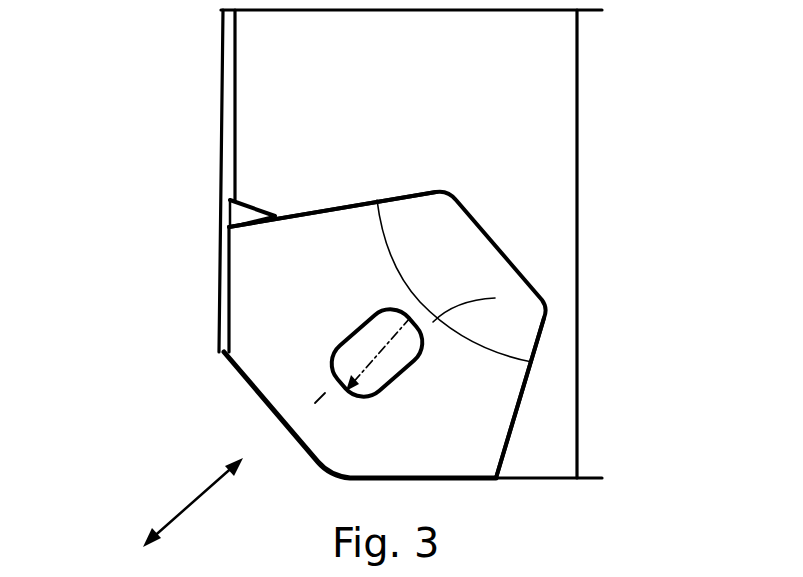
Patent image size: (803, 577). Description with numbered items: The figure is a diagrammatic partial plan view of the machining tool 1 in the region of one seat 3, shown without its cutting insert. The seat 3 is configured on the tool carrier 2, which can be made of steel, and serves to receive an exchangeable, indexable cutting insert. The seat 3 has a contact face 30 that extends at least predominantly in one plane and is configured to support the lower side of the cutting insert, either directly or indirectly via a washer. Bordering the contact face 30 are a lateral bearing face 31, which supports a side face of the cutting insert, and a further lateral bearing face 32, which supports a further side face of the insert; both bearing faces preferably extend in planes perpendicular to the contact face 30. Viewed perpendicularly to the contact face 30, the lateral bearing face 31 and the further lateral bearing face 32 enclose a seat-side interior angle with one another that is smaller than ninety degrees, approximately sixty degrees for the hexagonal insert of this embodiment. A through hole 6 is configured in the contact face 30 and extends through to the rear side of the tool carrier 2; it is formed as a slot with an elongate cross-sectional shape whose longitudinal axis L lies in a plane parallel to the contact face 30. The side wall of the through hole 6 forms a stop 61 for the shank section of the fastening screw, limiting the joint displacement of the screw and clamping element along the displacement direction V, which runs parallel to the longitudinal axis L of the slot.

The machining tool 1 is at (147, 105).
The tool carrier 2 is at (505, 125).
The seat 3 is at (283, 295).
The contact face 30 is at (273, 336).
The lateral bearing face 31 is at (502, 417).
The further lateral bearing face 32 is at (358, 214).
The through hole 6 is at (352, 360).
The stop 61 is at (353, 388).
The longitudinal axis L is at (327, 397).
The displacement direction V is at (192, 498).